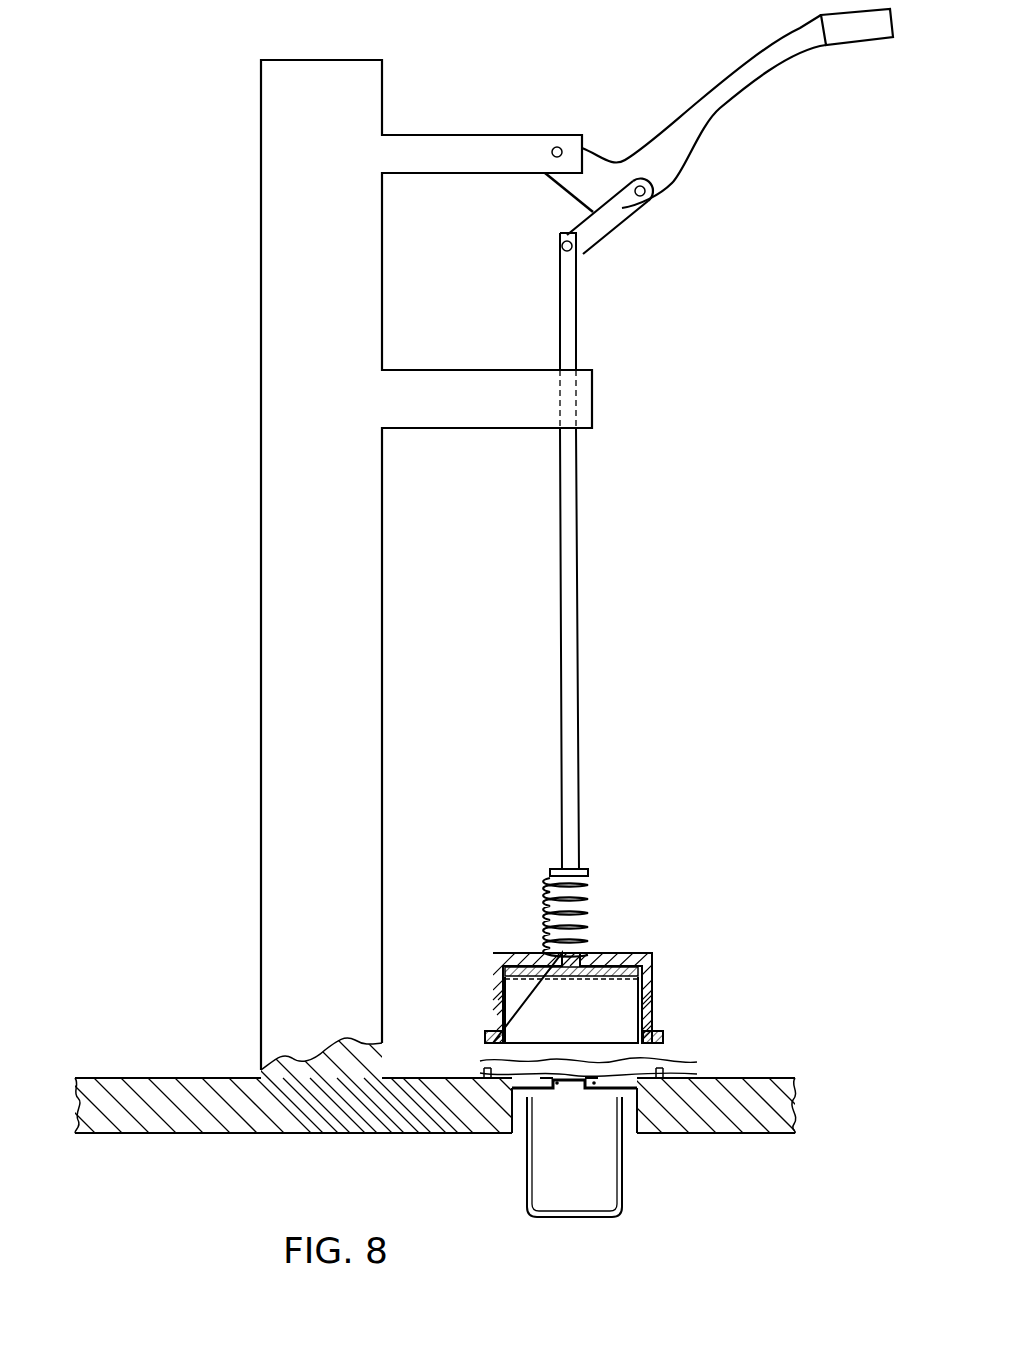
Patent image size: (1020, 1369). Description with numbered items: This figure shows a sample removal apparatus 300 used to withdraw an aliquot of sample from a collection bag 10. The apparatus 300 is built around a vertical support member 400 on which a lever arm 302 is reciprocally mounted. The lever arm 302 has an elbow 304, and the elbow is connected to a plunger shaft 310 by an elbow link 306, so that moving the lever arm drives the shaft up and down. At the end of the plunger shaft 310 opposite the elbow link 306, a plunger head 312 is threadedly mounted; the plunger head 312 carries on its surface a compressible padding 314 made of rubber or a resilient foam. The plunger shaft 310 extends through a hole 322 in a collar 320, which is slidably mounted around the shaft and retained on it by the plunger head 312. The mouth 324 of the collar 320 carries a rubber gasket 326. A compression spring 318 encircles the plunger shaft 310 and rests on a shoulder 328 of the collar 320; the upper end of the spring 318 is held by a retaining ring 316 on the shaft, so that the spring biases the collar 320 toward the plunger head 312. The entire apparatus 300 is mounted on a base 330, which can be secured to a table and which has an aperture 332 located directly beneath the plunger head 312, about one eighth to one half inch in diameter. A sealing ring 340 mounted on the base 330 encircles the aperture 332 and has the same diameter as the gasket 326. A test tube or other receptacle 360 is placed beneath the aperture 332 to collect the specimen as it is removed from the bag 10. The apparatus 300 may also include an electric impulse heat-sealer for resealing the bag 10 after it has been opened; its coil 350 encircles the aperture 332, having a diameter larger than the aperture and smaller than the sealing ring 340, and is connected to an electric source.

The bag 10 is at (571, 1082).
The sample removal apparatus 300 is at (225, 245).
The lever arm 302 is at (720, 98).
The elbow 304 is at (663, 197).
The elbow link 306 is at (609, 238).
The plunger shaft 310 is at (578, 546).
The plunger head 312 is at (645, 968).
The compressible padding 314 is at (650, 1005).
The retaining ring 316 is at (590, 868).
The compression spring 318 is at (590, 900).
The collar 320 is at (656, 1024).
The hole 322 is at (588, 953).
The mouth 324 is at (494, 1010).
The rubber gasket 326 is at (486, 1037).
The shoulder 328 is at (525, 952).
The base 330 is at (160, 1080).
The aperture 332 is at (566, 1086).
The sealing ring 340 is at (690, 1073).
The coil 350 is at (502, 1068).
The receptacle 360 is at (527, 1171).
The vertical support member 400 is at (270, 533).